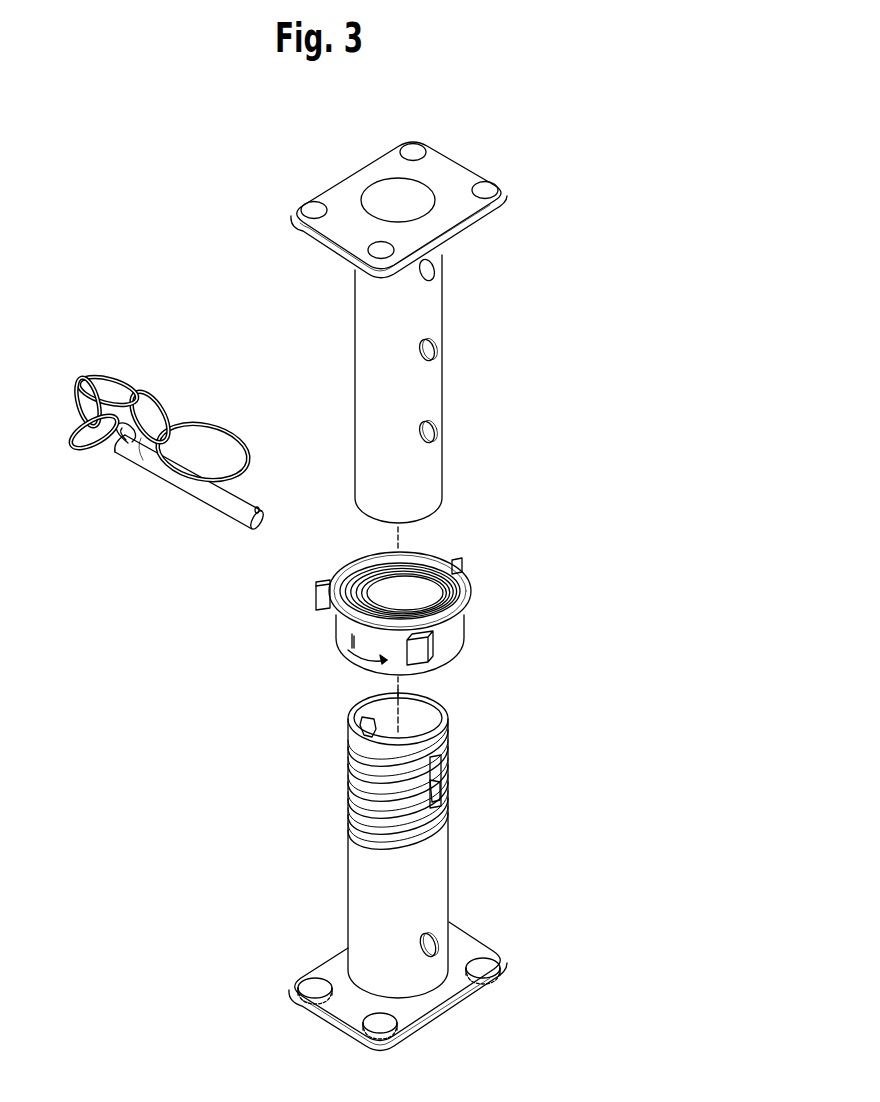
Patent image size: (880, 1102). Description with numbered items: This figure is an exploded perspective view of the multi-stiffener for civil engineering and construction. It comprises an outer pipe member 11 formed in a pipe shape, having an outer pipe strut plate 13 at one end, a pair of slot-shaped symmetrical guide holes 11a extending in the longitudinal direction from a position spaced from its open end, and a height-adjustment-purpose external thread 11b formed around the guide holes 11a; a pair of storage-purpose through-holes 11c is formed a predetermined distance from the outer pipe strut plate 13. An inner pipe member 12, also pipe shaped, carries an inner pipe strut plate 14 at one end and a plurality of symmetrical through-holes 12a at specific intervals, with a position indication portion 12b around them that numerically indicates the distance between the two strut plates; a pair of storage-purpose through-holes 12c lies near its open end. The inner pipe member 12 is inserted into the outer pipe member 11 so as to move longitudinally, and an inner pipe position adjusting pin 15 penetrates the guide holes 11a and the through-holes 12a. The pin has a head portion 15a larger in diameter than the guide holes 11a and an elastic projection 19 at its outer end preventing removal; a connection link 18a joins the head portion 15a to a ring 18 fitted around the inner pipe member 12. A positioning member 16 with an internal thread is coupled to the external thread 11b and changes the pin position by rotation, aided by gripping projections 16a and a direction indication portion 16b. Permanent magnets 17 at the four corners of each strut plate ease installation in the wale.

The outer pipe member 11 is at (378, 845).
The guide holes 11a is at (362, 720).
The height-adjustment-purpose external thread 11b is at (450, 760).
The storage-purpose through-holes 11c is at (435, 950).
The inner pipe member 12 is at (443, 302).
The through-holes 12a is at (443, 359).
The position indication portion 12b is at (360, 428).
The storage-purpose through-holes 12c is at (443, 433).
The outer pipe strut plate 13 is at (465, 945).
The inner pipe strut plate 14 is at (458, 168).
The inner pipe position adjusting pin 15 is at (205, 498).
The head portion 15a is at (132, 457).
The positioning member 16 is at (470, 580).
The projections 16a is at (316, 595).
The direction indication portion 16b is at (345, 653).
The permanent magnets 17 is at (488, 188).
The ring 18 is at (212, 425).
The connection link 18a is at (135, 380).
The elastic projection 19 is at (258, 508).